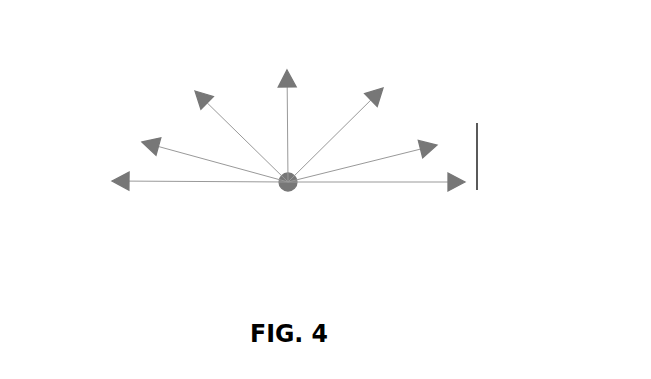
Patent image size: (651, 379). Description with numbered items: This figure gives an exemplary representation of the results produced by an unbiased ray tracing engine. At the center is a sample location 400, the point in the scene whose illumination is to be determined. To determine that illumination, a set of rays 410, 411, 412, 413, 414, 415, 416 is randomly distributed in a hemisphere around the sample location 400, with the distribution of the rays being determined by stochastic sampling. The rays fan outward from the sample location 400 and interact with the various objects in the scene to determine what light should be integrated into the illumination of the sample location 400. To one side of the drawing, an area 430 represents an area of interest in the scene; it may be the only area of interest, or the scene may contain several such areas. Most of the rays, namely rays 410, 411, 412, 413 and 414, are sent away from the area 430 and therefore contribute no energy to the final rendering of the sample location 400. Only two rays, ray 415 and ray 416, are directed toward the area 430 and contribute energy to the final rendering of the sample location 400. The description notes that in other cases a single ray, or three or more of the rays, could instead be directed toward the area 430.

The sample location 400 is at (290, 205).
The ray 410 is at (110, 180).
The ray 411 is at (138, 142).
The ray 412 is at (190, 88).
The ray 413 is at (287, 70).
The ray 414 is at (383, 88).
The ray 415 is at (437, 145).
The ray 416 is at (415, 187).
The area 430 is at (477, 160).